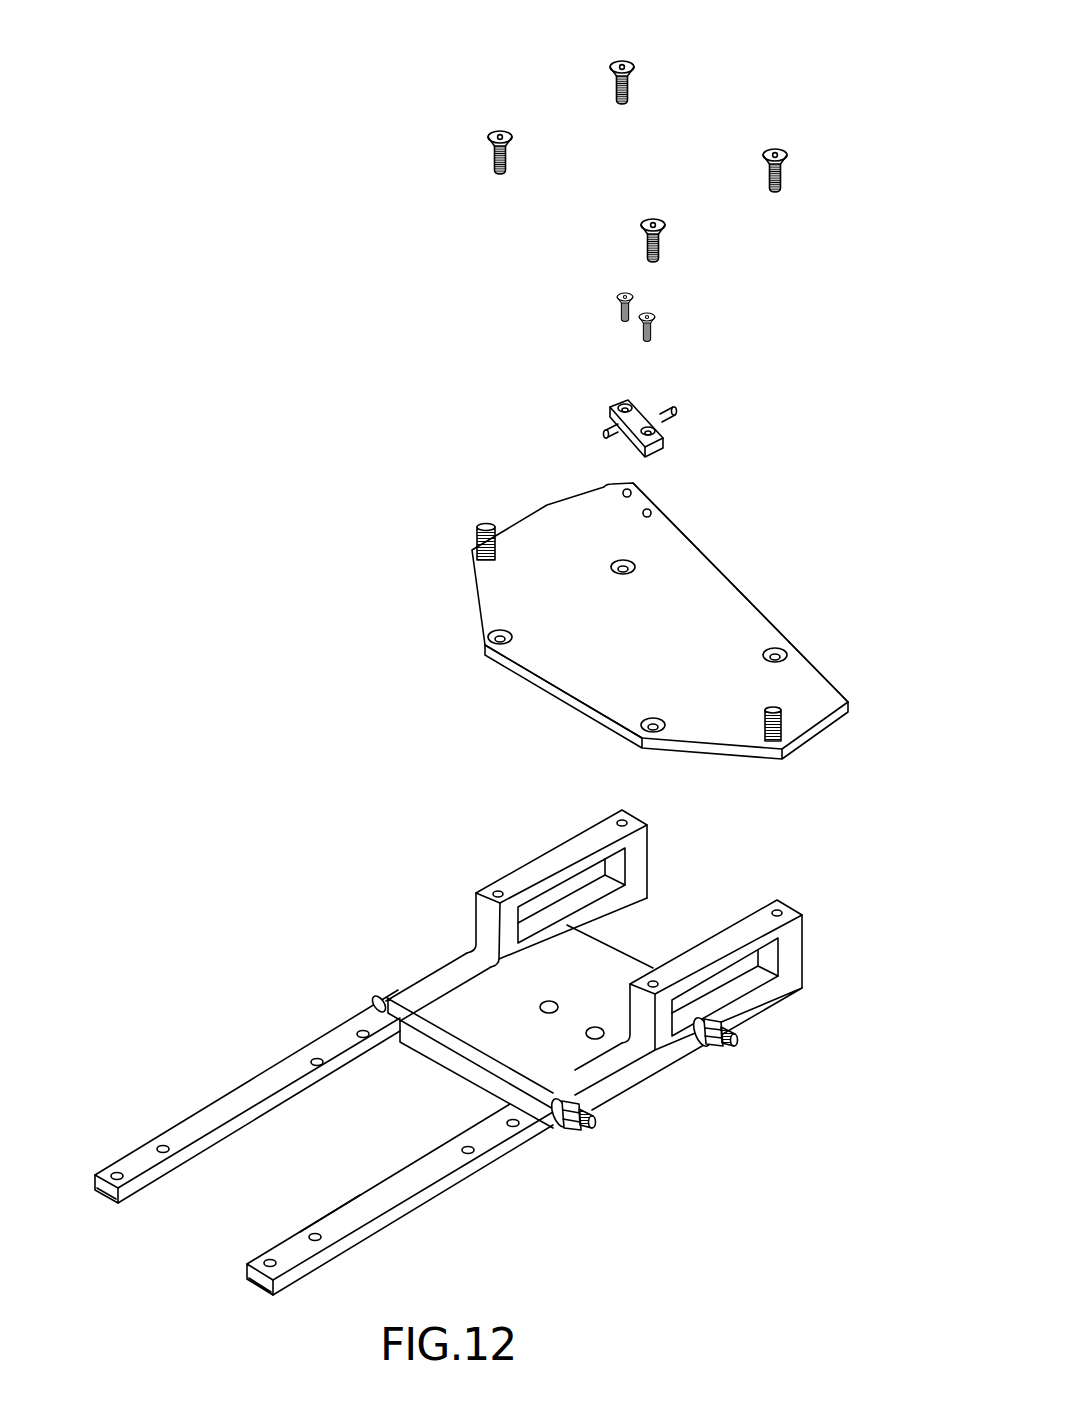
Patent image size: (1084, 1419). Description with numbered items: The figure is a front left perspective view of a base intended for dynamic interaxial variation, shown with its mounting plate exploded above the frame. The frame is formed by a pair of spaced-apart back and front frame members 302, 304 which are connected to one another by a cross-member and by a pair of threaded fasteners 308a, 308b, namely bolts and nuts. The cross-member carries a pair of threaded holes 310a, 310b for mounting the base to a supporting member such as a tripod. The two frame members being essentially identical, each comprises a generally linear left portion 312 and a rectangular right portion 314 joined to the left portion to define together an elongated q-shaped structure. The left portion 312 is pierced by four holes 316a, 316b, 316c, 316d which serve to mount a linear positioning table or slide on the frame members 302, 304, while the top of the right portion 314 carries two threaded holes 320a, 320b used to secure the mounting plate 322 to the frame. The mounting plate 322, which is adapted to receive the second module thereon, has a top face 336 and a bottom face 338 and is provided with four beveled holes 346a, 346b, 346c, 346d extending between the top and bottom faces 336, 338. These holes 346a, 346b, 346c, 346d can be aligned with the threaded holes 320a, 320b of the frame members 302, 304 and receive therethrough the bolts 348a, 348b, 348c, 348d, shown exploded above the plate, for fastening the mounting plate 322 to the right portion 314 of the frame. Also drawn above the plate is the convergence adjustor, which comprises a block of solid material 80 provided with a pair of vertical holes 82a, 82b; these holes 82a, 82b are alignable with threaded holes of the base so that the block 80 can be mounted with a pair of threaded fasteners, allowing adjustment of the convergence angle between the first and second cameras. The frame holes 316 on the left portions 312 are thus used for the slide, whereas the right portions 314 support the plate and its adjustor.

The bolt 348a is at (493, 132).
The bolt 348b is at (614, 58).
The bolt 348c is at (646, 217).
The bolt 348d is at (781, 146).
The block 80 is at (649, 402).
The vertical hole 82a is at (620, 403).
The vertical hole 82b is at (661, 432).
The mounting plate 322 is at (637, 619).
The bottom face 338 is at (772, 612).
The top face 336 is at (579, 700).
The beveled hole 346a is at (497, 633).
The beveled hole 346b is at (626, 560).
The beveled hole 346c is at (652, 716).
The beveled hole 346d is at (781, 648).
The back frame member 302 is at (222, 1112).
The front frame member 304 is at (336, 1150).
The left portion 312 is at (328, 1220).
The base plate 316 is at (557, 969).
The hole 316a is at (267, 1260).
The hole 316b is at (308, 1233).
The hole 316c is at (462, 1146).
The hole 316d is at (513, 1118).
The right portion 314 is at (777, 933).
The threaded hole 320a is at (655, 975).
The threaded hole 320b is at (779, 905).
The threaded hole 310a is at (541, 1003).
The threaded hole 310b is at (592, 1025).
The threaded fastener 308a is at (593, 1130).
The threaded fastener 308b is at (736, 1045).